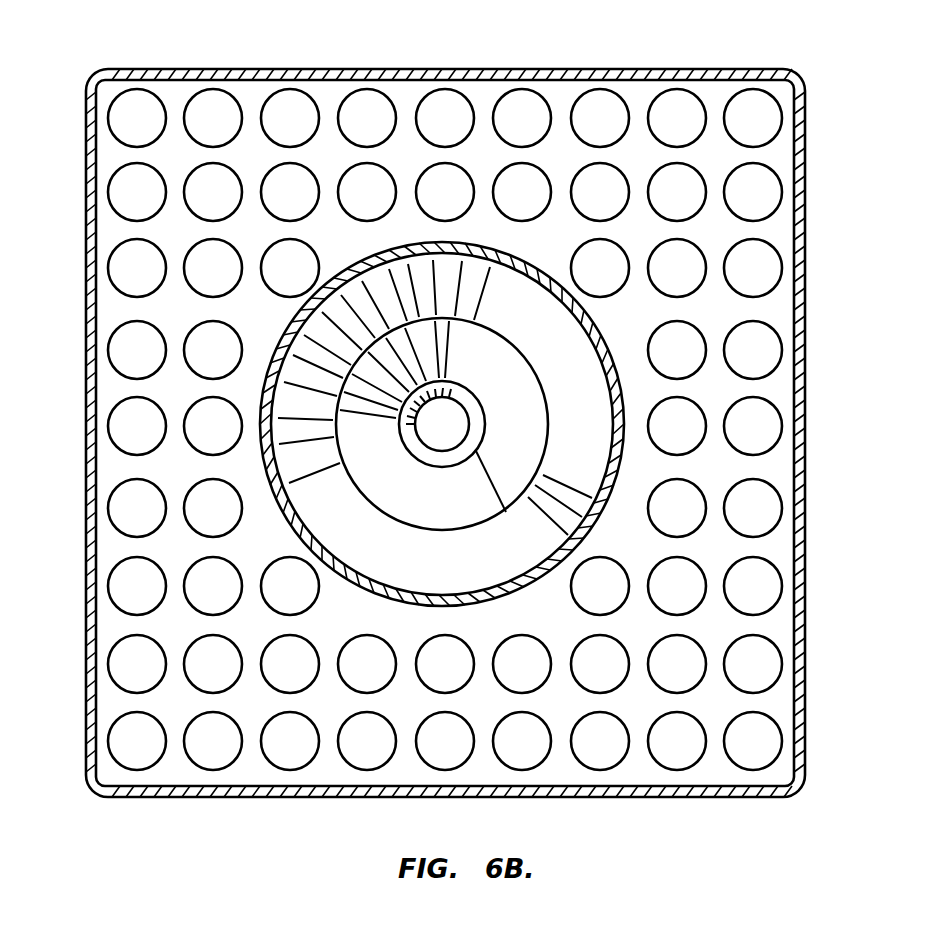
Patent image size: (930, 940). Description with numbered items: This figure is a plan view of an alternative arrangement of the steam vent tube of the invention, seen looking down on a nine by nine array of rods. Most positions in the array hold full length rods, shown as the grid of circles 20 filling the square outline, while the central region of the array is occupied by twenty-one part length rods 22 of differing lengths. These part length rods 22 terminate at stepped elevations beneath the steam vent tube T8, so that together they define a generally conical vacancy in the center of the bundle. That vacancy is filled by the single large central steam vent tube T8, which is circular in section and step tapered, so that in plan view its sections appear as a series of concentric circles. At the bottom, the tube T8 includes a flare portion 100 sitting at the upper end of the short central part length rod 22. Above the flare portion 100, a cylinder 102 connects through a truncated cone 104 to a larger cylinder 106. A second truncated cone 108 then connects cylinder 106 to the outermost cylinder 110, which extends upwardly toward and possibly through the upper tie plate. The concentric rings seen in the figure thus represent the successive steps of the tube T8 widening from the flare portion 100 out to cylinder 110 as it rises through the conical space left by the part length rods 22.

The grid openings 20 is at (135, 270).
The part length rods 22 is at (432, 436).
The flare portion 100 is at (476, 413).
The cylinder 102 is at (398, 436).
The truncated cone 104 is at (528, 456).
The cylinder 106 is at (420, 511).
The second truncated cone 108 is at (526, 559).
The cylinder 110 is at (402, 595).
The steam vent tube T8 is at (612, 461).